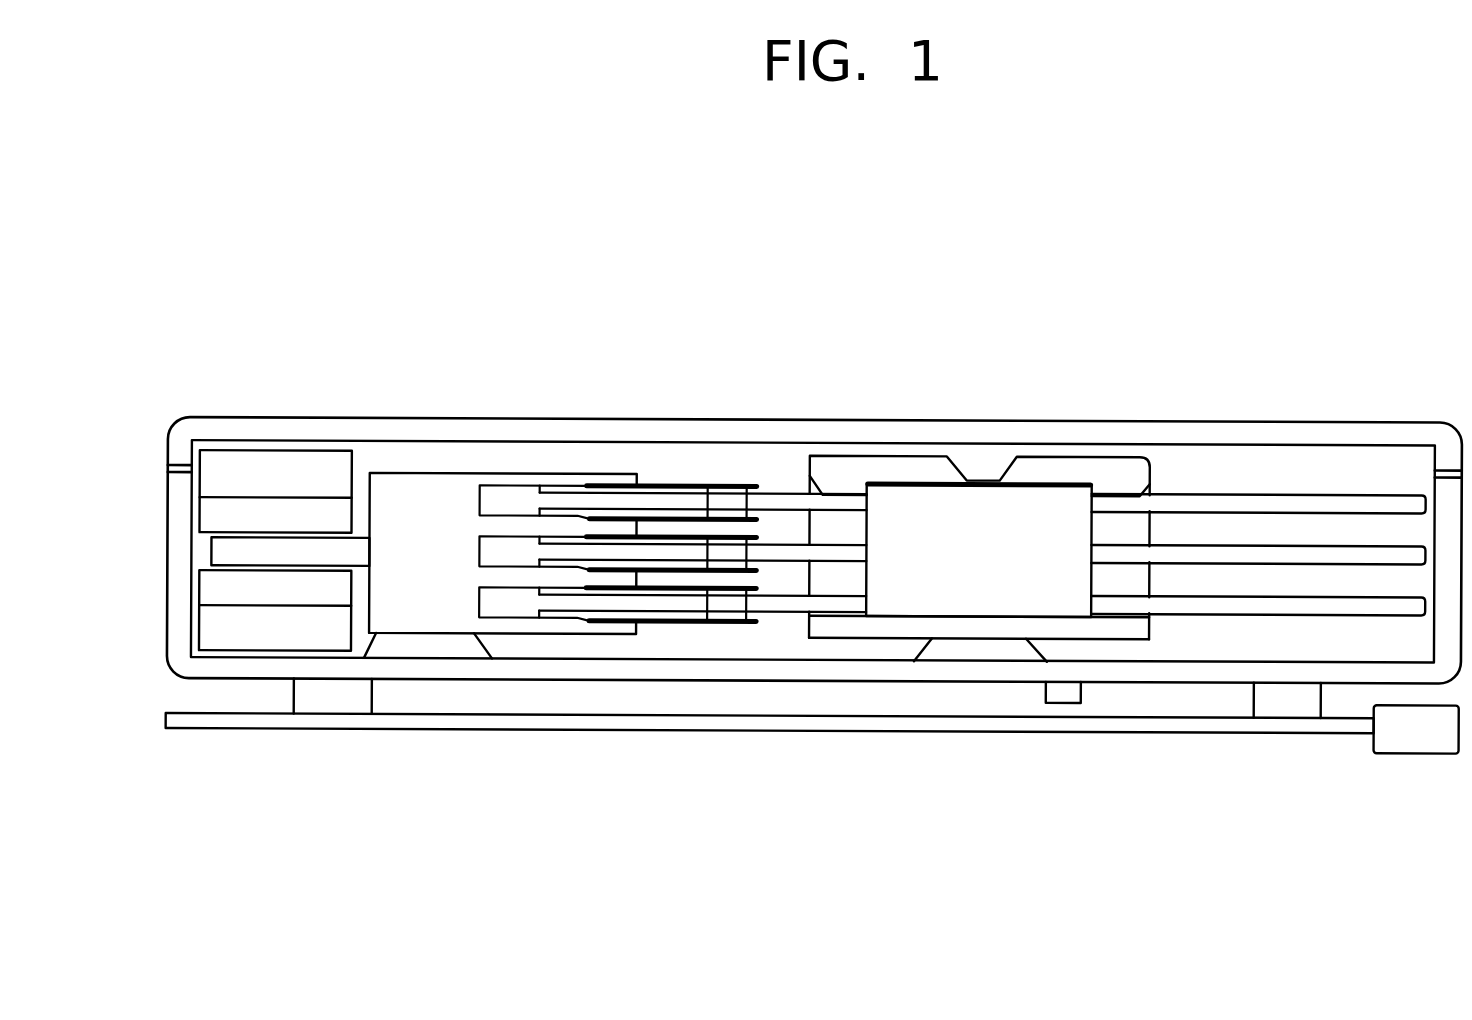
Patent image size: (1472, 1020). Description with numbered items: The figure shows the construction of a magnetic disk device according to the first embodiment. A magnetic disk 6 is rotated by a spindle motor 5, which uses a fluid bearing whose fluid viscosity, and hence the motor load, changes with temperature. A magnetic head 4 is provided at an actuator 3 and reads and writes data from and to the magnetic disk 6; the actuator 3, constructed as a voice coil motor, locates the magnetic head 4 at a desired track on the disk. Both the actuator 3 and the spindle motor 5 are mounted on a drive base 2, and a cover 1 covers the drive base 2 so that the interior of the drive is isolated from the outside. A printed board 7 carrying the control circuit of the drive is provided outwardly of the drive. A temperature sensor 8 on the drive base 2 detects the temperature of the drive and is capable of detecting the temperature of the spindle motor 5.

The cover 1 is at (257, 420).
The drive base 2 is at (542, 678).
The actuator 3 is at (430, 472).
The magnetic head 4 is at (750, 484).
The spindle motor 5 is at (1065, 505).
The magnetic disk 6 is at (1302, 495).
The printed board 7 is at (846, 733).
The temperature sensor 8 is at (1083, 690).